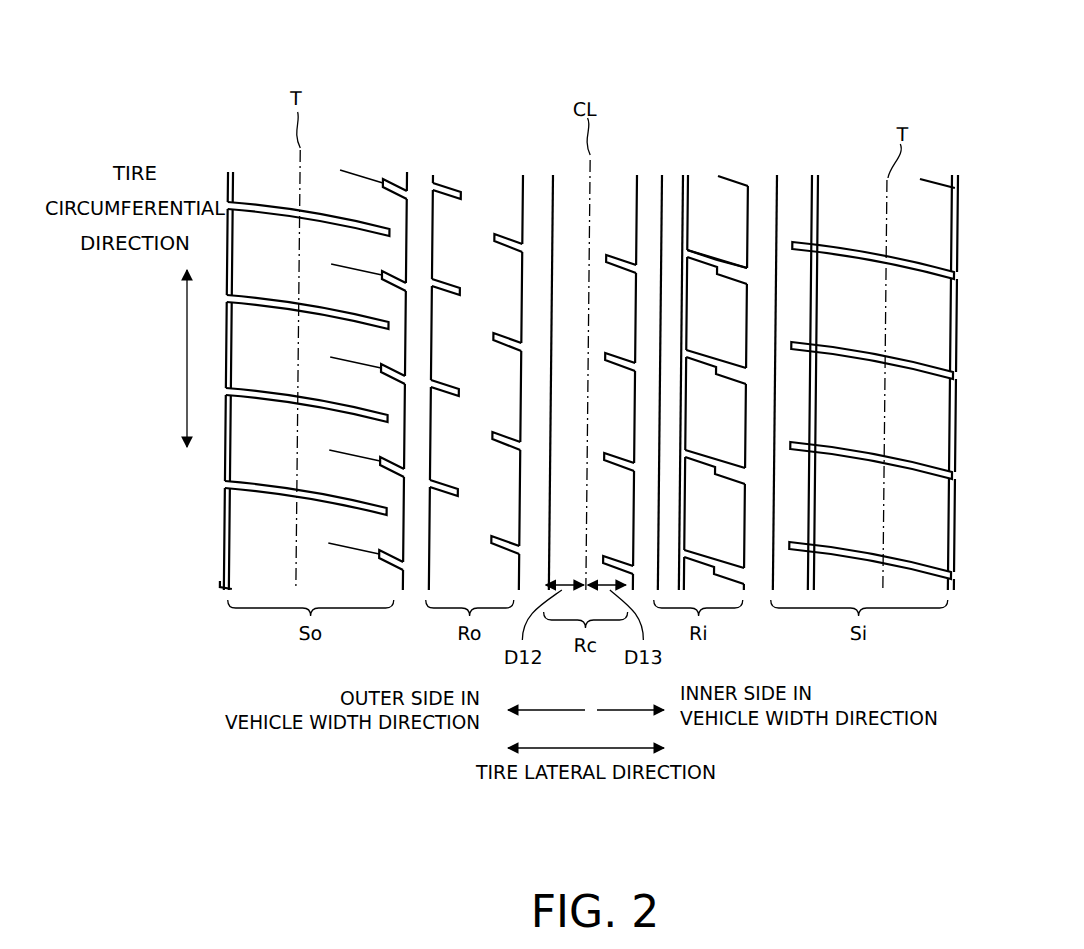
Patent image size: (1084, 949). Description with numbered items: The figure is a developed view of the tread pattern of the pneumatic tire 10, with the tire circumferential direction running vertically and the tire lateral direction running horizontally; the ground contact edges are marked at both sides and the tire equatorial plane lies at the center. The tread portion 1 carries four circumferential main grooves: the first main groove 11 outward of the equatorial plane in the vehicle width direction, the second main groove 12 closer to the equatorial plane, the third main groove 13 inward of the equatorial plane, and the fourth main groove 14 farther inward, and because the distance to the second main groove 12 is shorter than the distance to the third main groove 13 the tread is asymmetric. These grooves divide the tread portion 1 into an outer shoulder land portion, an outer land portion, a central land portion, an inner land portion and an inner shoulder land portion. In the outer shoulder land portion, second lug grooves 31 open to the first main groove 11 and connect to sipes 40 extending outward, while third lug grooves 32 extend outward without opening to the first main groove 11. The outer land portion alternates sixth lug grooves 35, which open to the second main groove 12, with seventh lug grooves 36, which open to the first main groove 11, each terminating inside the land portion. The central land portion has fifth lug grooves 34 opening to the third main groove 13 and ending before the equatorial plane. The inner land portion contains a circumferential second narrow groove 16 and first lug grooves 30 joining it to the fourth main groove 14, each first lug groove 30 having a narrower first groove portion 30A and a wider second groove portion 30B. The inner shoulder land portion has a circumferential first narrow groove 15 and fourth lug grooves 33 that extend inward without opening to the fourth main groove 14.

The tread portion 1 is at (351, 99).
The pneumatic tire 10 is at (271, 55).
The first main groove 11 is at (421, 176).
The second main groove 12 is at (537, 175).
The third main groove 13 is at (649, 175).
The fourth main groove 14 is at (772, 178).
The first narrow groove 15 is at (818, 174).
The second narrow groove 16 is at (686, 173).
The first lug groove 30 is at (690, 130).
The first groove portion 30A is at (712, 252).
The second groove portion 30B is at (738, 264).
The second lug groove 31 is at (394, 175).
The third lug groove 32 is at (270, 199).
The fourth lug groove 33 is at (851, 248).
The fifth lug groove 34 is at (611, 254).
The sixth lug groove 35 is at (497, 233).
The seventh lug groove 36 is at (455, 190).
The sipe 40 is at (352, 170).